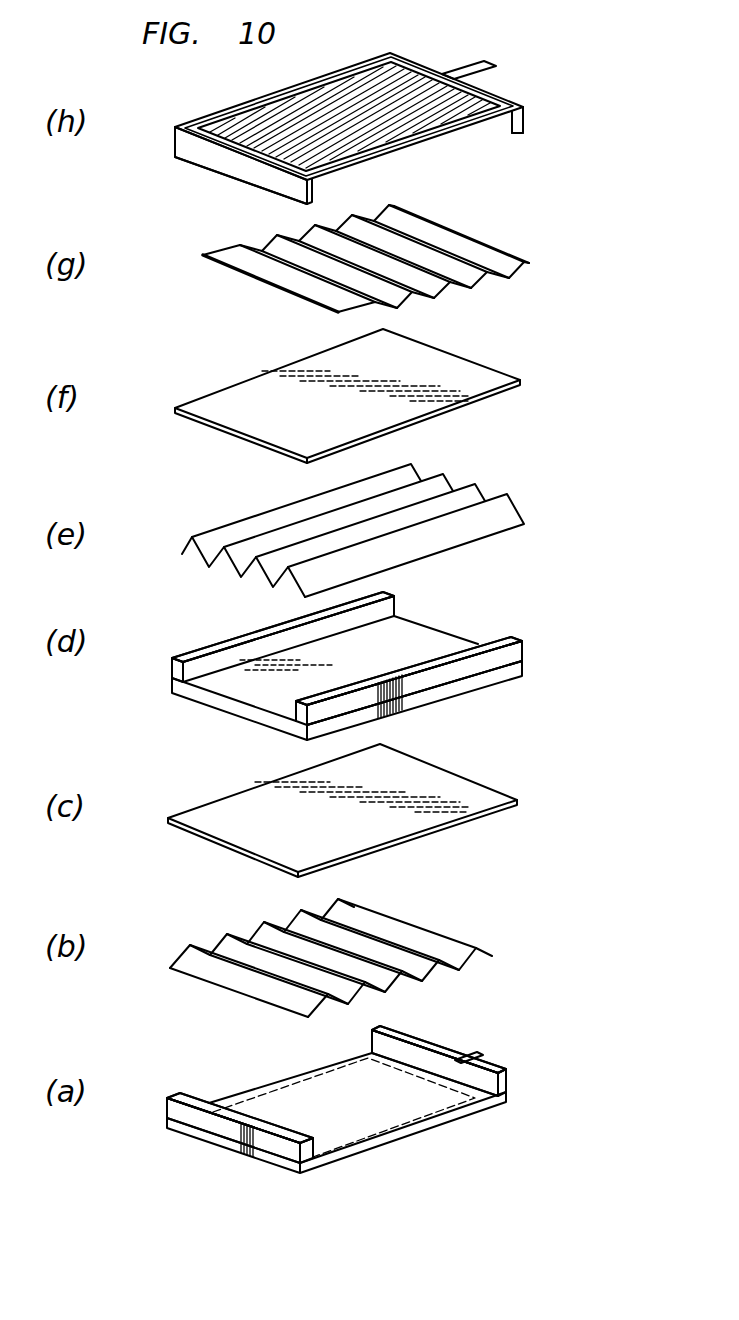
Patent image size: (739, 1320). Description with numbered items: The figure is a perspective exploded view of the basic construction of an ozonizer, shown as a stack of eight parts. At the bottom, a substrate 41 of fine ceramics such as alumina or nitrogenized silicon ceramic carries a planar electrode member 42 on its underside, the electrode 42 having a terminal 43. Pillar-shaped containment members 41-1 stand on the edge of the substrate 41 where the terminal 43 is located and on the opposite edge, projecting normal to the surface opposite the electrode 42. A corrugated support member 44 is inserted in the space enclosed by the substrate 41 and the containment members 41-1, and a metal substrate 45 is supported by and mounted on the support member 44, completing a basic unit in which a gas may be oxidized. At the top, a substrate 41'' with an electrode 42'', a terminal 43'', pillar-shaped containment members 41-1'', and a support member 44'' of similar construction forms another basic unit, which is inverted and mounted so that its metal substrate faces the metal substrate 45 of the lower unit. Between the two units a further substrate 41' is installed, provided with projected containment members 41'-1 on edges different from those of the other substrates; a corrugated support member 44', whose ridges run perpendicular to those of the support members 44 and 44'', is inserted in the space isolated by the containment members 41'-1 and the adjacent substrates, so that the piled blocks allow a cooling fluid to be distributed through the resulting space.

The substrate 41'' is at (383, 128).
The pillar-shaped containment members 41-1'' is at (361, 161).
The electrode 42'' is at (349, 123).
The terminal 43'' is at (505, 62).
The support member 44'' is at (377, 258).
The metal substrate 45 is at (468, 367).
The corrugated support member 44' is at (360, 524).
The substrate 41' is at (347, 664).
The projected containment members 41'-1 is at (356, 658).
The corrugated support member 44 is at (335, 958).
The substrate 41 is at (343, 1099).
The pillar-shaped containment members 41-1 is at (343, 1096).
The planar electrode member 42 is at (344, 1114).
The terminal 43 is at (488, 1034).